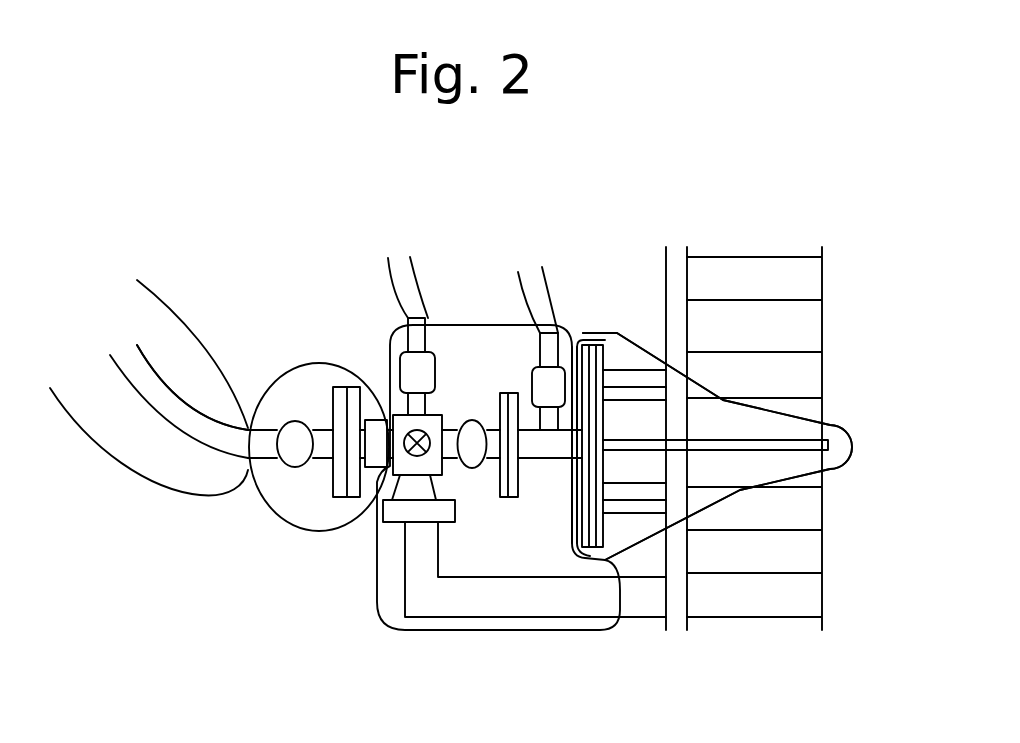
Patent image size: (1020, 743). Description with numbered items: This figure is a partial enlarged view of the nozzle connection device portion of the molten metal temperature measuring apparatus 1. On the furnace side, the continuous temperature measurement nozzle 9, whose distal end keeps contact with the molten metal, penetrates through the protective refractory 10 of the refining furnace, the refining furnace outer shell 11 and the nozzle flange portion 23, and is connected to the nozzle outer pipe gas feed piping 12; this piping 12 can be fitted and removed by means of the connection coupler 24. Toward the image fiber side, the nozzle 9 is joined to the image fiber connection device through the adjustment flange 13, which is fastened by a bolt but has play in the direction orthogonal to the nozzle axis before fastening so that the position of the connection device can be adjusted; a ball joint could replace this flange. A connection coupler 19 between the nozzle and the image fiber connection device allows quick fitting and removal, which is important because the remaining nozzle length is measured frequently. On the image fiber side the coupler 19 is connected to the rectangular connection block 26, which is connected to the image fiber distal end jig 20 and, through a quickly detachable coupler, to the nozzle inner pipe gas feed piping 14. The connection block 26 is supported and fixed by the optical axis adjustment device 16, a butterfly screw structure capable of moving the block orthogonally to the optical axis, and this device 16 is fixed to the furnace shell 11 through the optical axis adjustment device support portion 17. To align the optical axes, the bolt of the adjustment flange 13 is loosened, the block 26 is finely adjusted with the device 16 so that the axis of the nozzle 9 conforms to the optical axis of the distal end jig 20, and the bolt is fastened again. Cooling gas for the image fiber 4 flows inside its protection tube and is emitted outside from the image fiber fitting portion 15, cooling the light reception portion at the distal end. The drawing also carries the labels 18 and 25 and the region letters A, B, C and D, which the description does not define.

The apparatus 1 is at (895, 330).
The image fiber 4 is at (170, 425).
The continuous temperature measurement nozzle 9 is at (800, 452).
The protective refractory 10 is at (777, 273).
The refining furnace outer shell 11 is at (677, 263).
The nozzle outer pipe gas feed piping 12 is at (545, 292).
The adjustment flange 13 is at (508, 392).
The nozzle inner pipe gas feed piping 14 is at (412, 270).
The image fiber fitting portion 15 is at (342, 387).
The optical axis adjustment device 16 is at (417, 490).
The optical axis adjustment device support portion 17 is at (448, 602).
The ball joint 18 is at (259, 497).
The connection coupler 19 is at (474, 468).
The image fiber distal end jig 20 is at (380, 417).
The nozzle flange portion 23 is at (608, 333).
The connection coupler 24 is at (565, 372).
The joint 25 is at (432, 352).
The connection block 26 is at (385, 502).
The motor unit A is at (845, 420).
The housing B is at (493, 635).
The joint section C is at (275, 527).
The handle section D is at (100, 459).